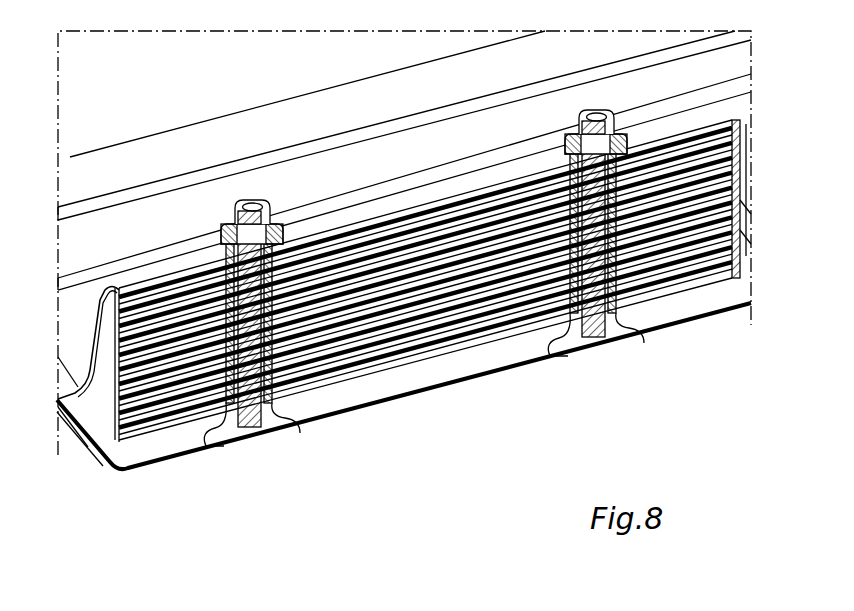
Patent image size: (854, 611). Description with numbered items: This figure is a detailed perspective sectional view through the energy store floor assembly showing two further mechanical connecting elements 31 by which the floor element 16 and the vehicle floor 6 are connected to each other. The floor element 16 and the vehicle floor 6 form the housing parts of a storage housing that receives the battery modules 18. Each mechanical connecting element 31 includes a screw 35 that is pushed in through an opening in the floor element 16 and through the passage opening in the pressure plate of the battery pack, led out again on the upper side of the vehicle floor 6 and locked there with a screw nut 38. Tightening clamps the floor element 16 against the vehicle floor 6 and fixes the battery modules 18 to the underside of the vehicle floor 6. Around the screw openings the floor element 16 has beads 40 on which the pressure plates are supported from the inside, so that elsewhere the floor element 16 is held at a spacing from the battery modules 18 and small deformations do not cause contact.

The vehicle floor 6 is at (296, 234).
The floor element 16 is at (72, 440).
The battery module 18 is at (138, 392).
The mechanical connecting element 31 is at (424, 298).
The screw 35 is at (268, 333).
The screw nut 38 is at (250, 202).
The bead 40 is at (207, 432).